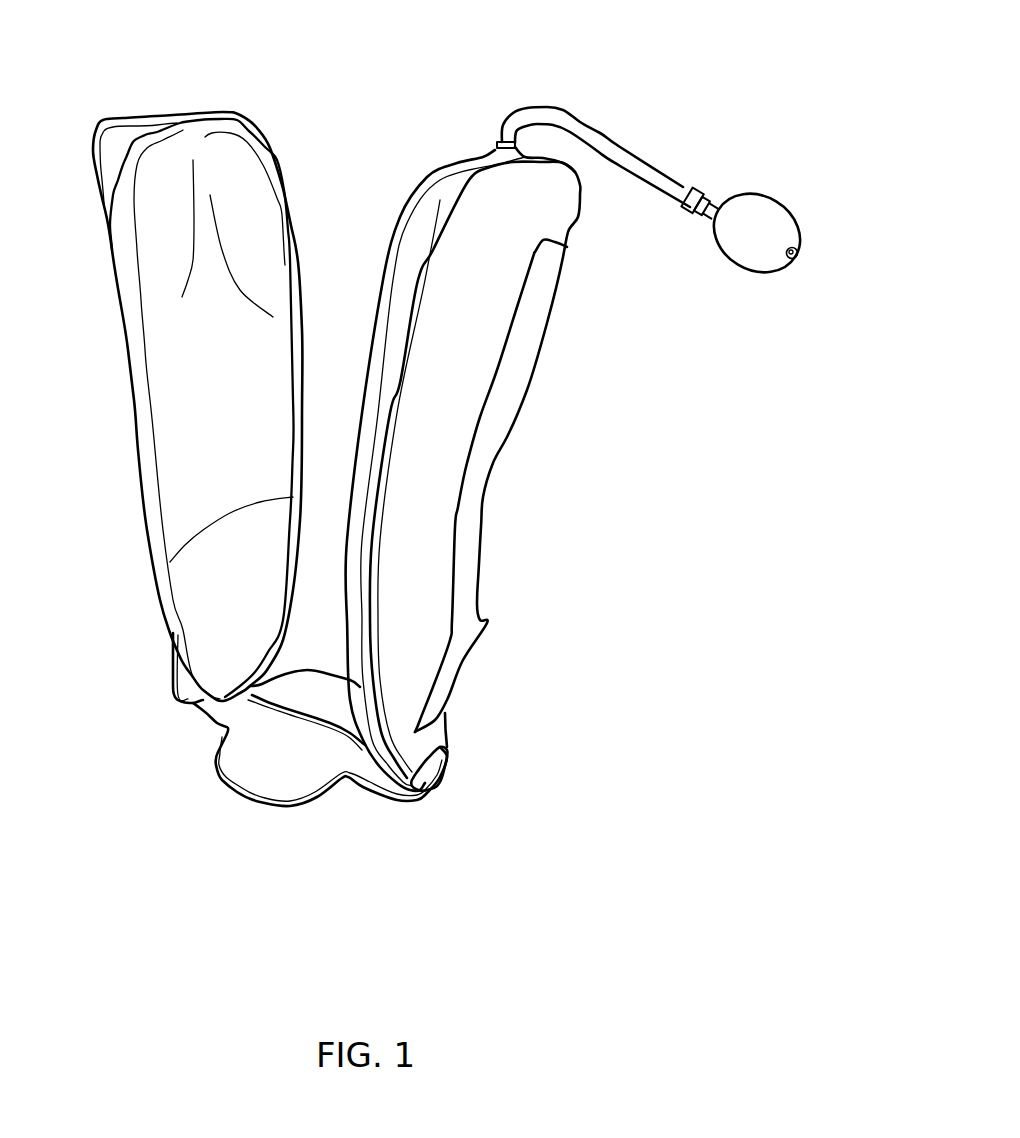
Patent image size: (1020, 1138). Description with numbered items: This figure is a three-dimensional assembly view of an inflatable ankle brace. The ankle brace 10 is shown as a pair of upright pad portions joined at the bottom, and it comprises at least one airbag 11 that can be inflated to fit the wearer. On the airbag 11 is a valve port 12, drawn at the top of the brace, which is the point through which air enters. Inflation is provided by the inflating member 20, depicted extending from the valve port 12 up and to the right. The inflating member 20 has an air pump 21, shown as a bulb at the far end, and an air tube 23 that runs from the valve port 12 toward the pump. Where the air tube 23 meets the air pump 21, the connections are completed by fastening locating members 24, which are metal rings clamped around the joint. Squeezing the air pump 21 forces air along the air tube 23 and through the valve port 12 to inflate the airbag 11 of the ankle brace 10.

The ankle brace 10 is at (124, 106).
The airbag 11 is at (172, 448).
The valve port 12 is at (503, 140).
The inflating member 20 is at (803, 277).
The air pump 21 is at (767, 200).
The air tube 23 is at (628, 162).
The locating members 24 is at (717, 197).